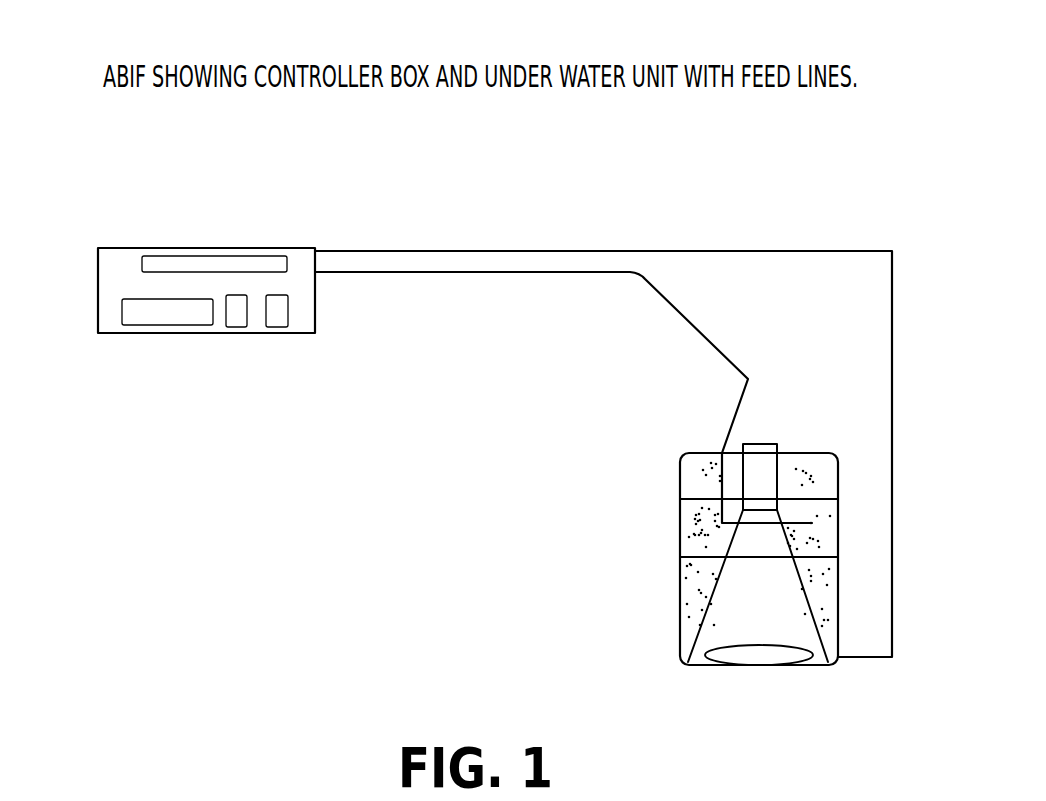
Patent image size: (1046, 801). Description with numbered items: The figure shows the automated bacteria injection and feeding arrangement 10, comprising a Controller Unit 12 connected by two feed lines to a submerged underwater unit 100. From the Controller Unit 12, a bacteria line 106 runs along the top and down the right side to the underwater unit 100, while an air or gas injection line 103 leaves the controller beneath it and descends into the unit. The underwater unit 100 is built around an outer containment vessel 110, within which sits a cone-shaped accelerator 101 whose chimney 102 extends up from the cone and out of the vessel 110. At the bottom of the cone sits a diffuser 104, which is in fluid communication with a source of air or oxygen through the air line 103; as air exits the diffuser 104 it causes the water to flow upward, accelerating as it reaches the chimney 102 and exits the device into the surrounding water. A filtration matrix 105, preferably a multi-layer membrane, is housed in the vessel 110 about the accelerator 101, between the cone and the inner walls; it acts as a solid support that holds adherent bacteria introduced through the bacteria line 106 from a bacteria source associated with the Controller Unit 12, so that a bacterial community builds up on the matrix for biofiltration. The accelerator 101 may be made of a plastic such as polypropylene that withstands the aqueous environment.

The automated bacteria injection and feeding system 10 is at (360, 493).
The Controller Unit 12 is at (120, 248).
The underwater unit 100 is at (668, 607).
The accelerator 101 is at (775, 594).
The chimney 102 is at (783, 440).
The air or gas injection line 103 is at (647, 288).
The diffuser 104 is at (771, 649).
The filtration matrix 105 is at (820, 582).
The bacterial injection line 106 is at (806, 251).
The containment vessel 110 is at (841, 480).